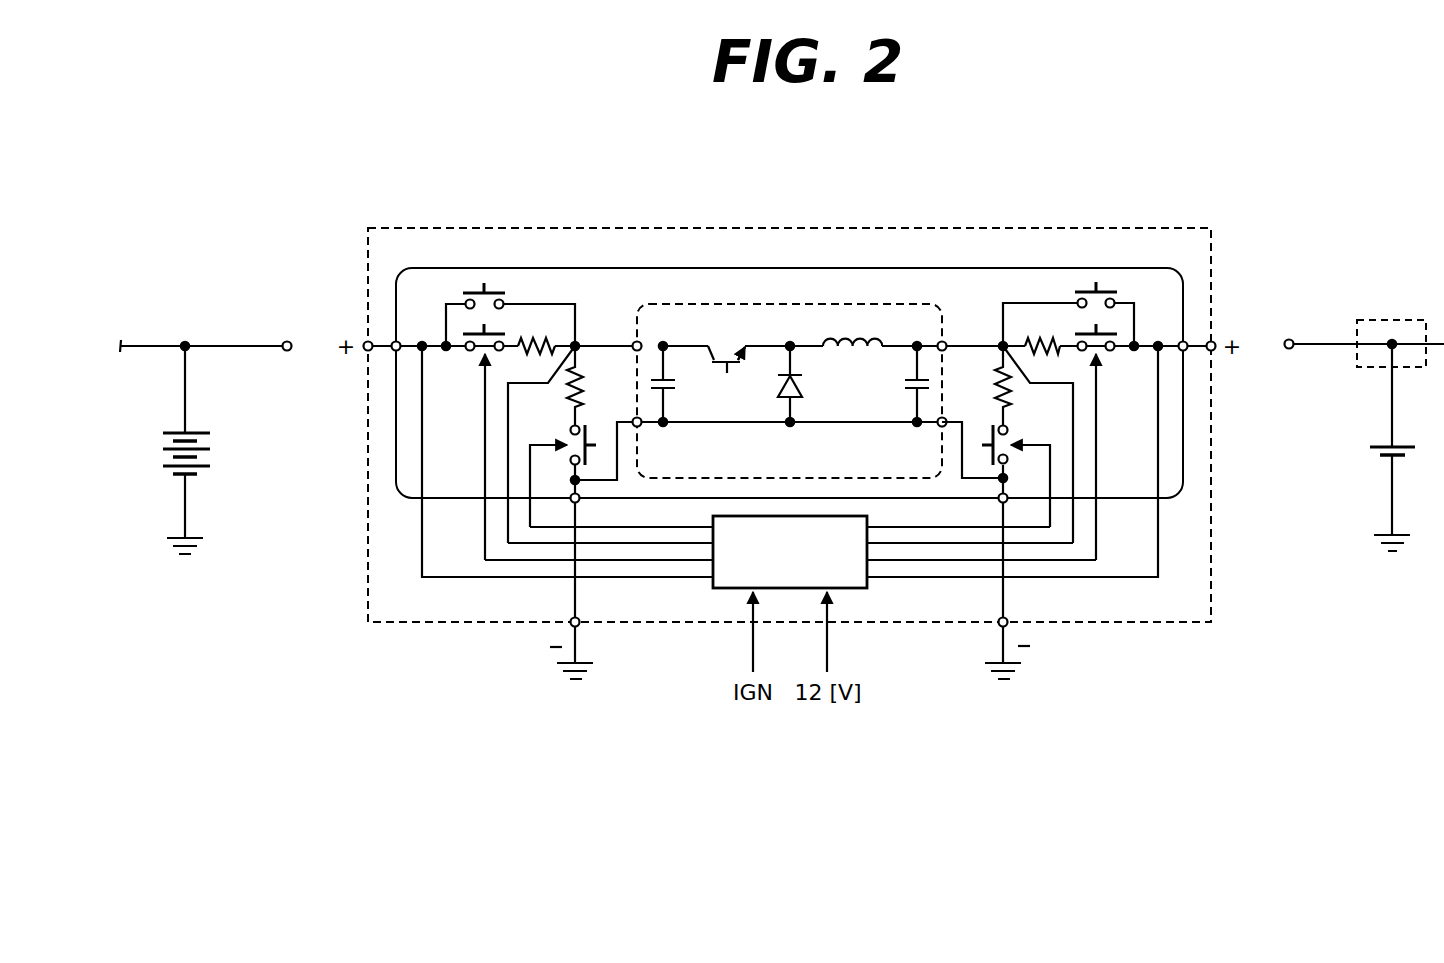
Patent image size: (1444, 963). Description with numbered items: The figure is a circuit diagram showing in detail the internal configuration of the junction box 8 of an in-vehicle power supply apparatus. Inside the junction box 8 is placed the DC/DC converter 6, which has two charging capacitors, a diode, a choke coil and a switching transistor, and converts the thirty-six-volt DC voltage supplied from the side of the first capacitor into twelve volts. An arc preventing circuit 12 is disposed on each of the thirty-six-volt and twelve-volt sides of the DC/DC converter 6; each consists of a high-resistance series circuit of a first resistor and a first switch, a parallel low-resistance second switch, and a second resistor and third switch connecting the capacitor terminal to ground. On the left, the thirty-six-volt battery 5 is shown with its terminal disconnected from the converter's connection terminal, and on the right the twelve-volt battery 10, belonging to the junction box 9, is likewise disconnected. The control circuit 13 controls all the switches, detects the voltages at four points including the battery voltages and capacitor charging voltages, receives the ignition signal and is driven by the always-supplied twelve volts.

The 36-volt battery 5 is at (215, 455).
The DC/DC converter 6 is at (800, 304).
The junction box 8 is at (922, 228).
The junction box 9 is at (1410, 367).
The 12-volt battery 10 is at (1370, 452).
The arc preventing circuit 12 is at (672, 592).
The control circuit 13 is at (848, 590).